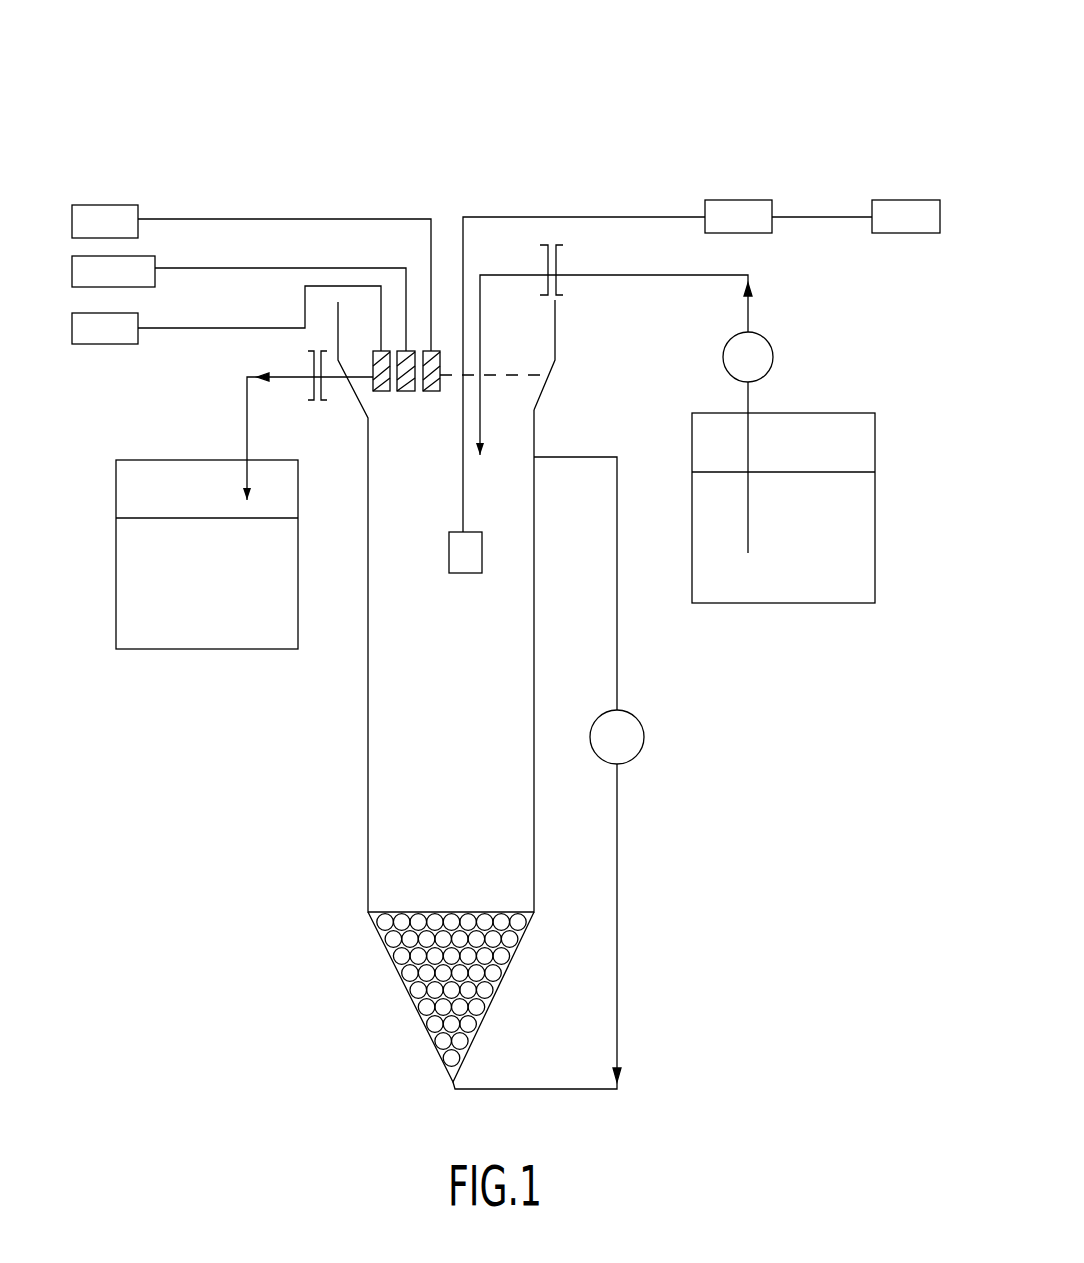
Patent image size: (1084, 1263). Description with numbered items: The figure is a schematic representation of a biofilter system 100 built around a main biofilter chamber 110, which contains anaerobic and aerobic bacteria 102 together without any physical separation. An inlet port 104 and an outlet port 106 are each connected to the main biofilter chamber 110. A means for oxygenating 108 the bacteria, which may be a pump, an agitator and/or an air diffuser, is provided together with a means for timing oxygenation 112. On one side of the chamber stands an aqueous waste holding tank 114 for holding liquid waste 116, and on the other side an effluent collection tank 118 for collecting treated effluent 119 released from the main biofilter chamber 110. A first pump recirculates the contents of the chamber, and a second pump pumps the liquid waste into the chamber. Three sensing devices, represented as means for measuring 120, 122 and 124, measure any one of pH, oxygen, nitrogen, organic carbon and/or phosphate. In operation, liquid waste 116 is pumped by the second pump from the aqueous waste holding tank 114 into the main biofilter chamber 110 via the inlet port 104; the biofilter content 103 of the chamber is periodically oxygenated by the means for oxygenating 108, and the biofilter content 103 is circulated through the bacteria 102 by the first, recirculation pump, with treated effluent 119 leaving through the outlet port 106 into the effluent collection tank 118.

The biofilter system 100 is at (507, 152).
The anaerobic and aerobic bacteria 102 is at (457, 893).
The biofilter content 103 is at (398, 772).
The inlet port 104 is at (572, 258).
The outlet port 106 is at (307, 393).
The means for oxygenating 108 is at (465, 573).
The main biofilter chamber 110 is at (560, 387).
The means for timing oxygenation 112 is at (900, 200).
The aqueous waste holding tank 114 is at (760, 603).
The liquid waste 116 is at (825, 572).
The effluent collection tank 118 is at (232, 649).
The treated effluent 119 is at (167, 608).
The means for measuring 120 is at (117, 200).
The means for measuring 122 is at (157, 258).
The means for measuring 124 is at (100, 345).